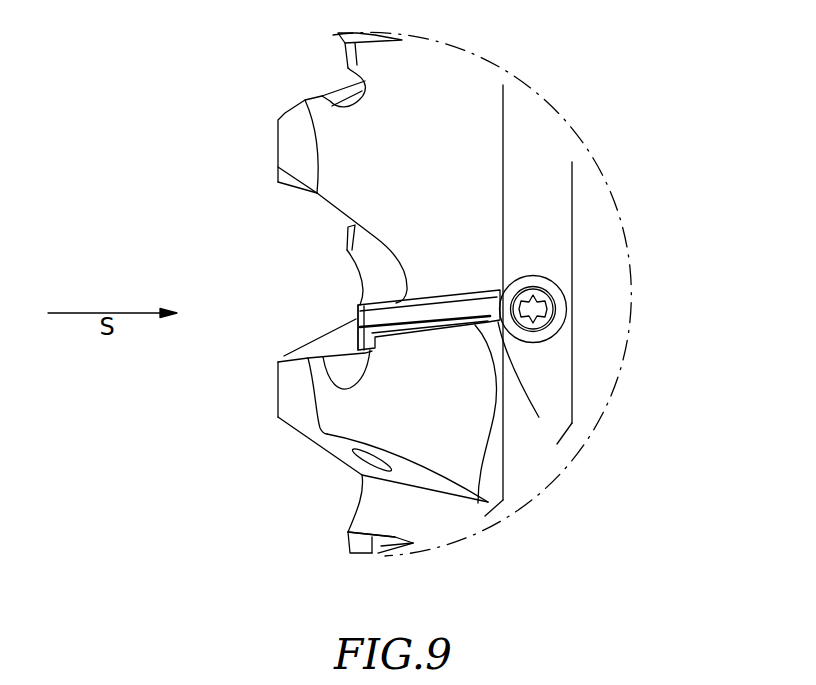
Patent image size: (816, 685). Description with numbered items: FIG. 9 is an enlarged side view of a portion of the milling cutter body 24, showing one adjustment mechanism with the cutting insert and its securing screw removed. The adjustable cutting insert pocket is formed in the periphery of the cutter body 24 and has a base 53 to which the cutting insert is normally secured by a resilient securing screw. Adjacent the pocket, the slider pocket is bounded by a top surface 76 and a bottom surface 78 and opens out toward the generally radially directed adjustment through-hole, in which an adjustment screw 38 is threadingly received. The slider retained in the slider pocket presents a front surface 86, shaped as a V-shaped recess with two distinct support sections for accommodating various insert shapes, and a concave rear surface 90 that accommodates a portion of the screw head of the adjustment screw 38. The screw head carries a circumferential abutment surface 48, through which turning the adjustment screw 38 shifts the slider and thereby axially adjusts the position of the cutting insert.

The cutter body 24 is at (457, 101).
The base 53 is at (286, 356).
The top surface 76 is at (468, 295).
The rear surface 90 is at (505, 290).
The adjustment screw 38 is at (567, 299).
The circumferential abutment surface 48 is at (539, 417).
The bottom surface 78 is at (478, 503).
The front surface 86 is at (340, 307).